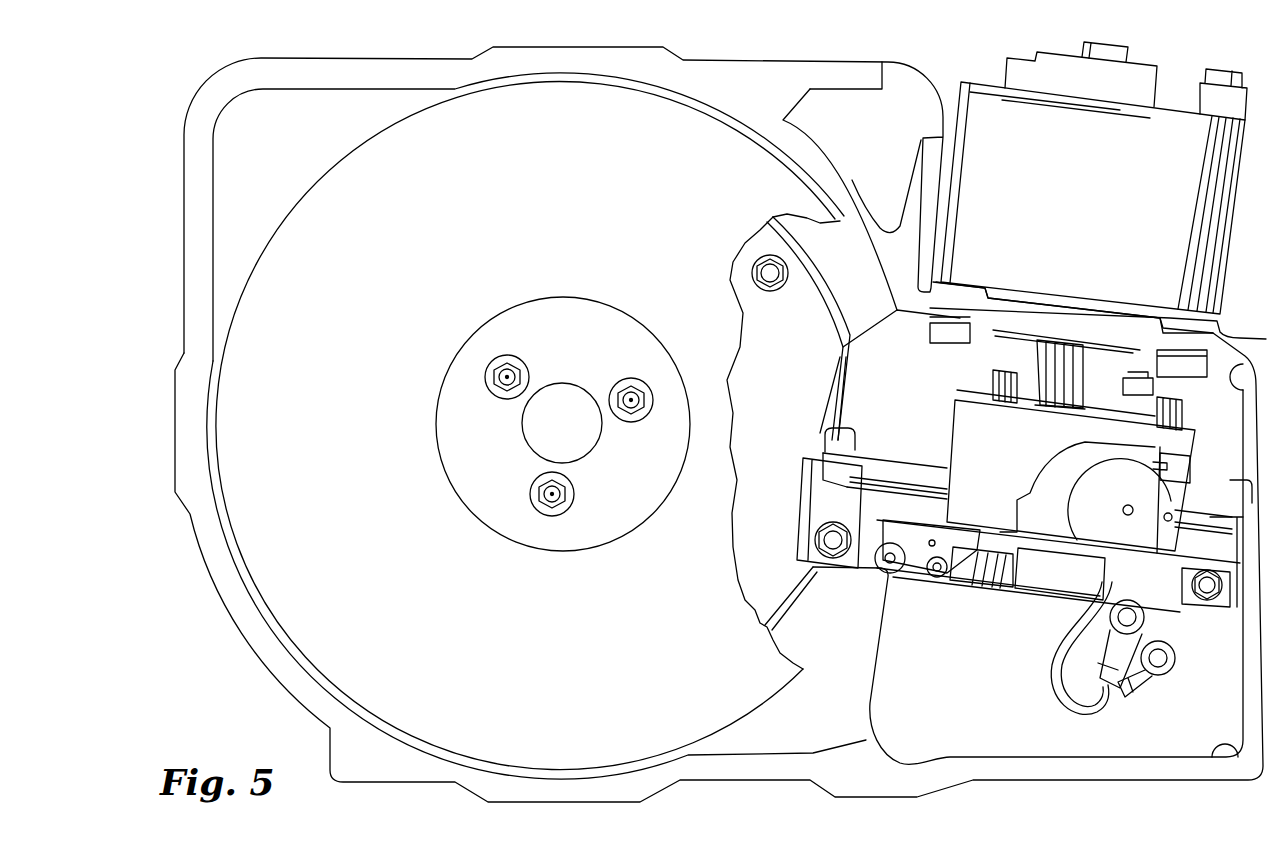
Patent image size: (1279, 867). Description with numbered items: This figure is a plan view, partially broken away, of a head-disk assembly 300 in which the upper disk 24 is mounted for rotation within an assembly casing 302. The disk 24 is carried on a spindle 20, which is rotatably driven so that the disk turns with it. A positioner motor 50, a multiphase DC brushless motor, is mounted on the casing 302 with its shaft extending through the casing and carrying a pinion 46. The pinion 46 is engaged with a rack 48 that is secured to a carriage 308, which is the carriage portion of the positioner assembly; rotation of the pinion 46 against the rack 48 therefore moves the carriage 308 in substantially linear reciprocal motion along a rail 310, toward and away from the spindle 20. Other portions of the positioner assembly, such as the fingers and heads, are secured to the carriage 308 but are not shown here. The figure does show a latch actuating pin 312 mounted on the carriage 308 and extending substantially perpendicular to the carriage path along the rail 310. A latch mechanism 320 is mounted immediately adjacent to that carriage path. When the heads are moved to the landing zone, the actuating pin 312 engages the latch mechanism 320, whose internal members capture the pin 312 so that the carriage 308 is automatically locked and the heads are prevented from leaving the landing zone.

The spindle 20 is at (563, 382).
The upper disk 24 is at (575, 214).
The pinion 46 is at (1038, 358).
The rack 48 is at (993, 383).
The positioner motor 50 is at (1095, 190).
The head-disk assembly 300 is at (250, 660).
The assembly casing 302 is at (752, 62).
The carriage 308 is at (1195, 443).
The rail 310 is at (895, 462).
The latch actuating pin 312 is at (983, 530).
The latch mechanism 320 is at (997, 595).